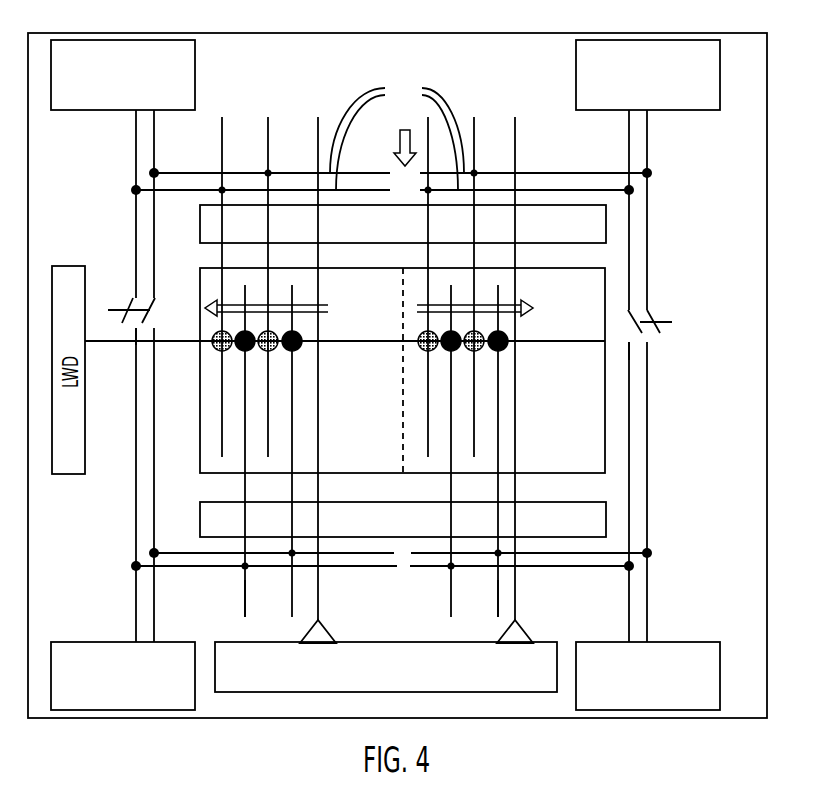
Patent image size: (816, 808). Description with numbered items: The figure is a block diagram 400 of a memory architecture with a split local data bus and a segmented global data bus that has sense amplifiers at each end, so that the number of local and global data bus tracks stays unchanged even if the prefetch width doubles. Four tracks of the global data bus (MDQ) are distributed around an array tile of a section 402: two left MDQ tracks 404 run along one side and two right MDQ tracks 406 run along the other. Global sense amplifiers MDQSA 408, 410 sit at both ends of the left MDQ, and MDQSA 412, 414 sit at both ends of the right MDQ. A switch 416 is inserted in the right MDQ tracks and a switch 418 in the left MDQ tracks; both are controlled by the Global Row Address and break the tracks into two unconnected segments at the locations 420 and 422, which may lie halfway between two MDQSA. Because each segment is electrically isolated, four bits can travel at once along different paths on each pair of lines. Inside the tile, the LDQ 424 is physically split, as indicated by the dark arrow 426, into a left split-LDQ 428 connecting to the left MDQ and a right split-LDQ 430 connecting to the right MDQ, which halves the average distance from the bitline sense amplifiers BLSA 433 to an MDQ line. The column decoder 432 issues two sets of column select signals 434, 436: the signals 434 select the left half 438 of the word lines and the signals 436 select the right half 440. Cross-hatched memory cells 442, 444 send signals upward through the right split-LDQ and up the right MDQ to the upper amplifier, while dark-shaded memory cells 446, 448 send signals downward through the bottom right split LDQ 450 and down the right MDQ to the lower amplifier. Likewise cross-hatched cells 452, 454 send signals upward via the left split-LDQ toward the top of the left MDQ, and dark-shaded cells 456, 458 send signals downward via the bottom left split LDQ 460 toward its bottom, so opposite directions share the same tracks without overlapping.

The block diagram 400 is at (233, 33).
The array tile of a section 402 is at (553, 437).
The left MDQ tracks 404 is at (155, 490).
The right MDQ tracks 406 is at (629, 457).
The global sense amplifier (MDQSA) 408 is at (100, 110).
The global sense amplifier (MDQSA) 410 is at (67, 641).
The global sense amplifier (MDQSA) 412 is at (690, 110).
The global sense amplifier (MDQSA) 414 is at (697, 641).
The switch 416 is at (713, 292).
The switch 418 is at (118, 308).
The location of division 420 is at (637, 338).
The location of division 422 is at (146, 318).
The LDQ 424 is at (390, 80).
The dark arrow 426 is at (400, 128).
The left split-LDQ 428 is at (243, 188).
The right split-LDQ 430 is at (442, 52).
The column decoder 432 is at (452, 692).
The BLSA 433 is at (606, 225).
The column select signals (CSL) 434 is at (320, 587).
The column select signals (CSL) 436 is at (512, 614).
The left half of the word lines 438 is at (328, 306).
The right half of the word lines 440 is at (528, 306).
The memory cell 442 is at (423, 350).
The memory cell 444 is at (469, 350).
The memory cell 446 is at (446, 350).
The memory cell 448 is at (493, 350).
The right split LDQ 450 is at (617, 553).
The memory cell 452 is at (227, 350).
The memory cell 454 is at (273, 350).
The memory cell 456 is at (250, 350).
The memory cell 458 is at (297, 350).
The left split LDQ 460 is at (250, 628).